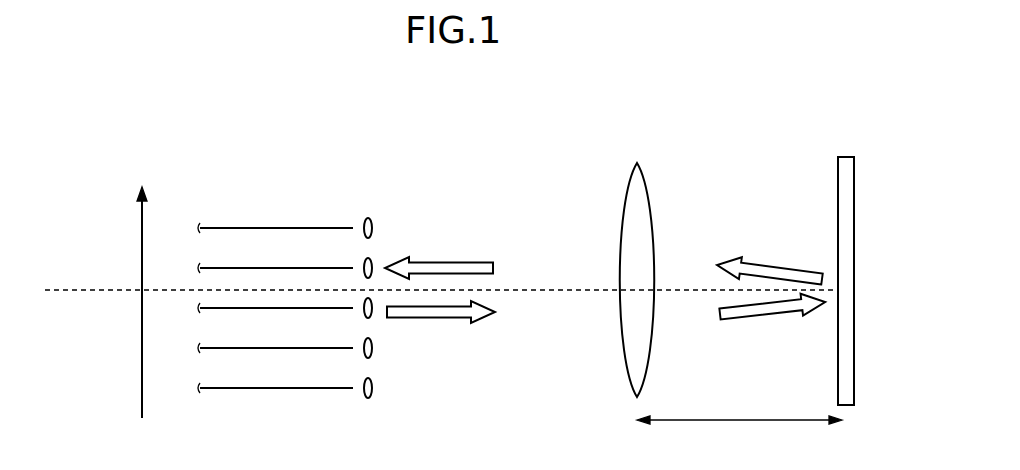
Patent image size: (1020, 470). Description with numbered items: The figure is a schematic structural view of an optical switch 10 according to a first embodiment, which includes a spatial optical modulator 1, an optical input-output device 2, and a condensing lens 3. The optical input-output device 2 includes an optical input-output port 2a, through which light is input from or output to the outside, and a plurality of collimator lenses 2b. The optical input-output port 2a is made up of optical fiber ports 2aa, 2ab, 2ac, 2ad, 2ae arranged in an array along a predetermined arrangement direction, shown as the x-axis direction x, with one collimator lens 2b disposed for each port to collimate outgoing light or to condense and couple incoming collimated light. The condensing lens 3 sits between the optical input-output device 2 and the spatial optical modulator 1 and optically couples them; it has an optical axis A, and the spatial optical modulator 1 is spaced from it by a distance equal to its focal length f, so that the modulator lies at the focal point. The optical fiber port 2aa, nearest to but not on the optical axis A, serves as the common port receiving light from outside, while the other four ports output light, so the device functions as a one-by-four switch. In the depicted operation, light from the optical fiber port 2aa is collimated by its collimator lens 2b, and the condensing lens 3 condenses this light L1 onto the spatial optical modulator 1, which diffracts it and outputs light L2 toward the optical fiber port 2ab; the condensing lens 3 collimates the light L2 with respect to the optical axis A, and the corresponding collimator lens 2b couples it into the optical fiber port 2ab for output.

The spatial optical modulator 1 is at (847, 157).
The optical input-output device 2 is at (271, 284).
The optical input-output port 2a is at (252, 305).
The optical fiber port 2aa is at (218, 312).
The optical fiber port 2ab is at (200, 268).
The optical fiber port 2ac is at (222, 228).
The optical fiber port 2ad is at (218, 350).
The optical fiber port 2ae is at (232, 392).
The collimator lens 2b is at (367, 206).
The condensing lens 3 is at (637, 163).
The optical switch 10 is at (740, 125).
The optical axis A is at (66, 288).
The light L1 is at (437, 323).
The light L2 is at (447, 262).
The x-axis direction x is at (141, 291).
The focal length f is at (739, 408).